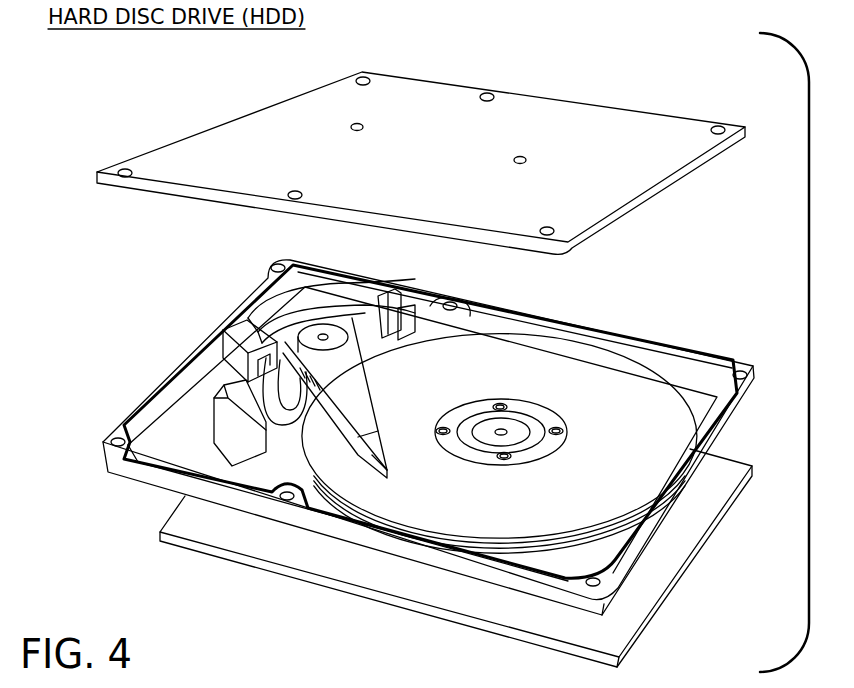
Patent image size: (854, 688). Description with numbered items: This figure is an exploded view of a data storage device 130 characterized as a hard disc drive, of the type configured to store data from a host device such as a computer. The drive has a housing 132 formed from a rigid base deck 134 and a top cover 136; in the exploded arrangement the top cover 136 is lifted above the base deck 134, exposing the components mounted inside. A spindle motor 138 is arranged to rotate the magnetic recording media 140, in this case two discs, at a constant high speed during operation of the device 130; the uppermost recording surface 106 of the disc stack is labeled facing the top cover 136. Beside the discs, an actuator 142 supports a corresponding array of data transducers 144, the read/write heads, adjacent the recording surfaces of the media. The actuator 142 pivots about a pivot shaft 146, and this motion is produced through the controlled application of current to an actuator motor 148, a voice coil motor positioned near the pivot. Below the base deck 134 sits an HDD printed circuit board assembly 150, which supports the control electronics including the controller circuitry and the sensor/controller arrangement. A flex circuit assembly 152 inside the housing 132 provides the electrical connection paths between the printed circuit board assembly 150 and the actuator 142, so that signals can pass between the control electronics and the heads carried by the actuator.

The storage device 130 is at (158, 112).
The top cover 136 is at (517, 117).
The housing 132 is at (142, 329).
The rigid base deck 134 is at (670, 517).
The printed circuit board assembly 150 is at (283, 574).
The disc 106 is at (499, 436).
The magnetic recording media 140 is at (523, 543).
The spindle motor 138 is at (515, 428).
The actuator motor 148 is at (305, 298).
The flex circuit assembly 152 is at (258, 335).
The pivot shaft 146 is at (325, 333).
The actuator 142 is at (358, 398).
The data transducers 144 is at (385, 470).